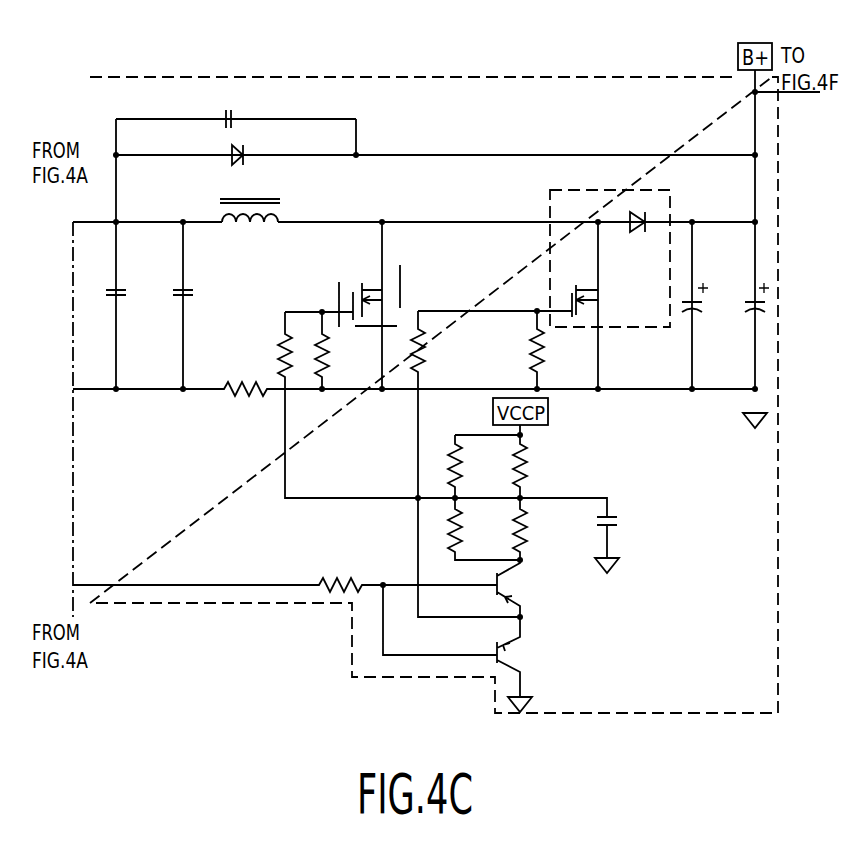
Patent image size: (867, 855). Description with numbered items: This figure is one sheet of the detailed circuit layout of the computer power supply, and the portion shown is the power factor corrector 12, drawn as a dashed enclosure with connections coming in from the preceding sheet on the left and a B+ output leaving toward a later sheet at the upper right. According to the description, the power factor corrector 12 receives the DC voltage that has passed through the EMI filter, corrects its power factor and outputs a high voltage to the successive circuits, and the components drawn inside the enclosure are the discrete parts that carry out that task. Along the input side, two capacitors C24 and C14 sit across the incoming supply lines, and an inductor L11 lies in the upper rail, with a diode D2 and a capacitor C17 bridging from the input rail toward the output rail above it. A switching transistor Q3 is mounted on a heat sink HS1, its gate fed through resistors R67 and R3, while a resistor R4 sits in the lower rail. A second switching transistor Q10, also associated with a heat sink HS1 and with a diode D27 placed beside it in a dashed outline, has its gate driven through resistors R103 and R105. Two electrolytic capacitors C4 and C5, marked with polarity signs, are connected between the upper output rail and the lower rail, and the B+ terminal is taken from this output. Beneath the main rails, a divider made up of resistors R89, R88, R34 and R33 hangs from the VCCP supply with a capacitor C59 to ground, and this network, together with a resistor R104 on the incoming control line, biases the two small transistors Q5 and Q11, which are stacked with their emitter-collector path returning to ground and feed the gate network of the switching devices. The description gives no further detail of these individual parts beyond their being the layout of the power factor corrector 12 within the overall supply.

The power factor corrector 12 is at (570, 98).
The capacitor C17 is at (248, 108).
The diode D2 is at (252, 145).
The inductor L11 is at (250, 200).
The capacitor C24 is at (128, 280).
The capacitor C14 is at (197, 280).
The MOSFET transistor Q3 is at (348, 301).
The heat sink HS1 is at (378, 265).
The resistor R67 is at (329, 405).
The resistor R3 is at (319, 350).
The resistor R4 is at (245, 401).
The resistor R103 is at (465, 464).
The resistor R105 is at (506, 350).
The MOSFET transistor Q10 is at (555, 300).
The diode D27 is at (636, 237).
The electrolytic capacitor C4 is at (699, 307).
The electrolytic capacitor C5 is at (761, 307).
The resistor R89 is at (473, 472).
The resistor R88 is at (538, 472).
The resistor R34 is at (484, 532).
The resistor R33 is at (538, 533).
The capacitor C59 is at (534, 528).
The resistor R104 is at (340, 573).
The transistor Q5 is at (518, 583).
The transistor Q11 is at (472, 641).